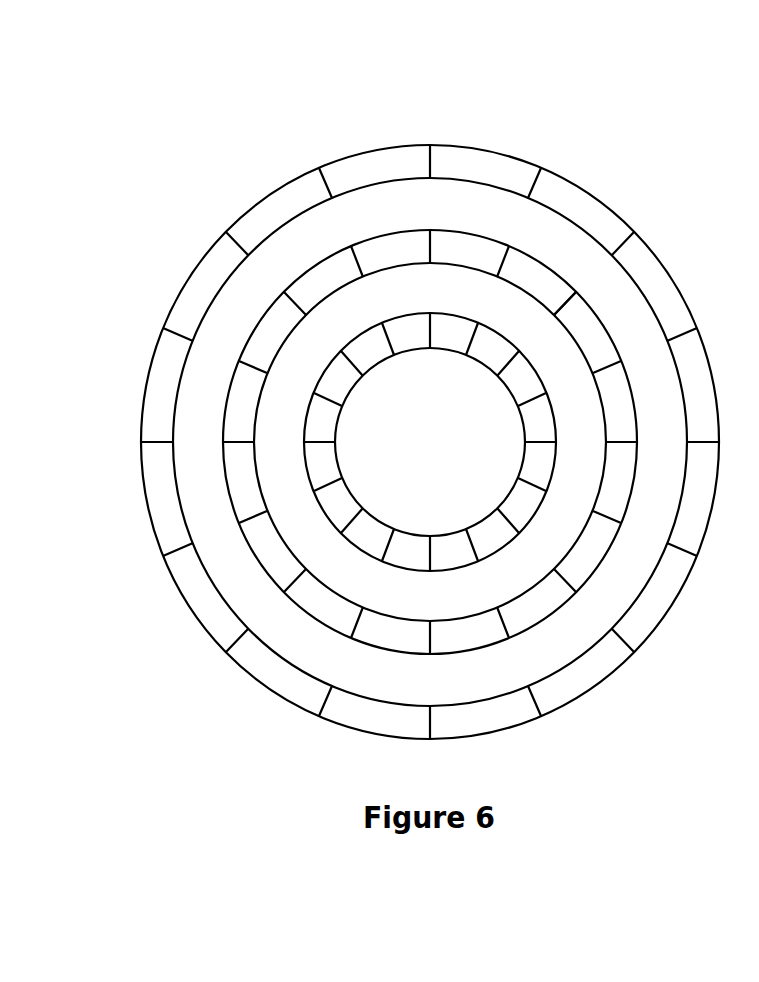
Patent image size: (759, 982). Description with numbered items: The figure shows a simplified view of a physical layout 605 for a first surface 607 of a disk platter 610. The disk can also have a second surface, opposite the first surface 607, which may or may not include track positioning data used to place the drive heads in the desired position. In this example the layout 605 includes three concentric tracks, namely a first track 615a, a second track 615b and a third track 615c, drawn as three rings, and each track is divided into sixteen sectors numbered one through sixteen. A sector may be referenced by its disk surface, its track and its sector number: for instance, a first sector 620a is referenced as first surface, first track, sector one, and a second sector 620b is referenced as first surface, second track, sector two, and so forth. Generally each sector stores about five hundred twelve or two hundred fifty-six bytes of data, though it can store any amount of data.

The physical layout 605 is at (292, 107).
The first surface 607 is at (254, 204).
The disk platter 610 is at (431, 441).
The first track 615a is at (283, 707).
The second track 615b is at (303, 613).
The third track 615c is at (500, 558).
The first sector 620a is at (435, 323).
The second sector 620b is at (552, 265).